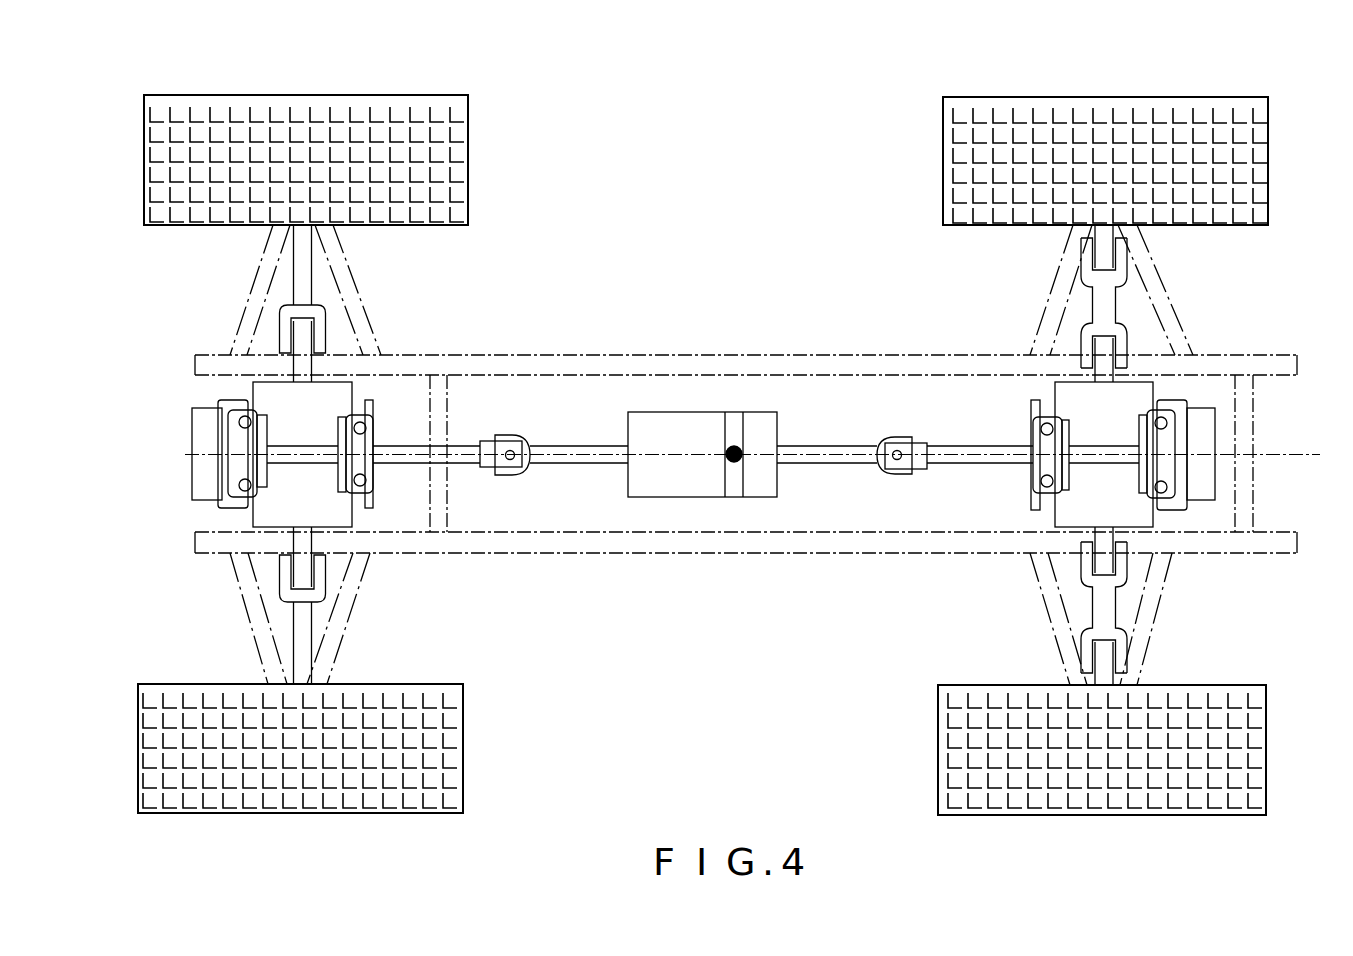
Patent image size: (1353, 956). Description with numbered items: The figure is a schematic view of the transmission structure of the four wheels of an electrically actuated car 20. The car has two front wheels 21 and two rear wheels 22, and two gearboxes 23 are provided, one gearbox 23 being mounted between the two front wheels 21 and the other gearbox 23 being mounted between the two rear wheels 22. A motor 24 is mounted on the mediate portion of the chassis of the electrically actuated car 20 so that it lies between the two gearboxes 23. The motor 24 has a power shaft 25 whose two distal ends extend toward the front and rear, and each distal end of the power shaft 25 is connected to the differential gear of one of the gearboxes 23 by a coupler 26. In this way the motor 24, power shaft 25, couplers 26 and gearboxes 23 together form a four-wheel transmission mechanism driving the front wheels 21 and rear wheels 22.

The electrically actuated car 20 is at (756, 117).
The front wheels 21 is at (1268, 160).
The rear wheels 22 is at (462, 160).
The gearbox 23 is at (268, 392).
The motor 24 is at (700, 425).
The power shaft 25 is at (577, 446).
The coupler 26 is at (501, 440).